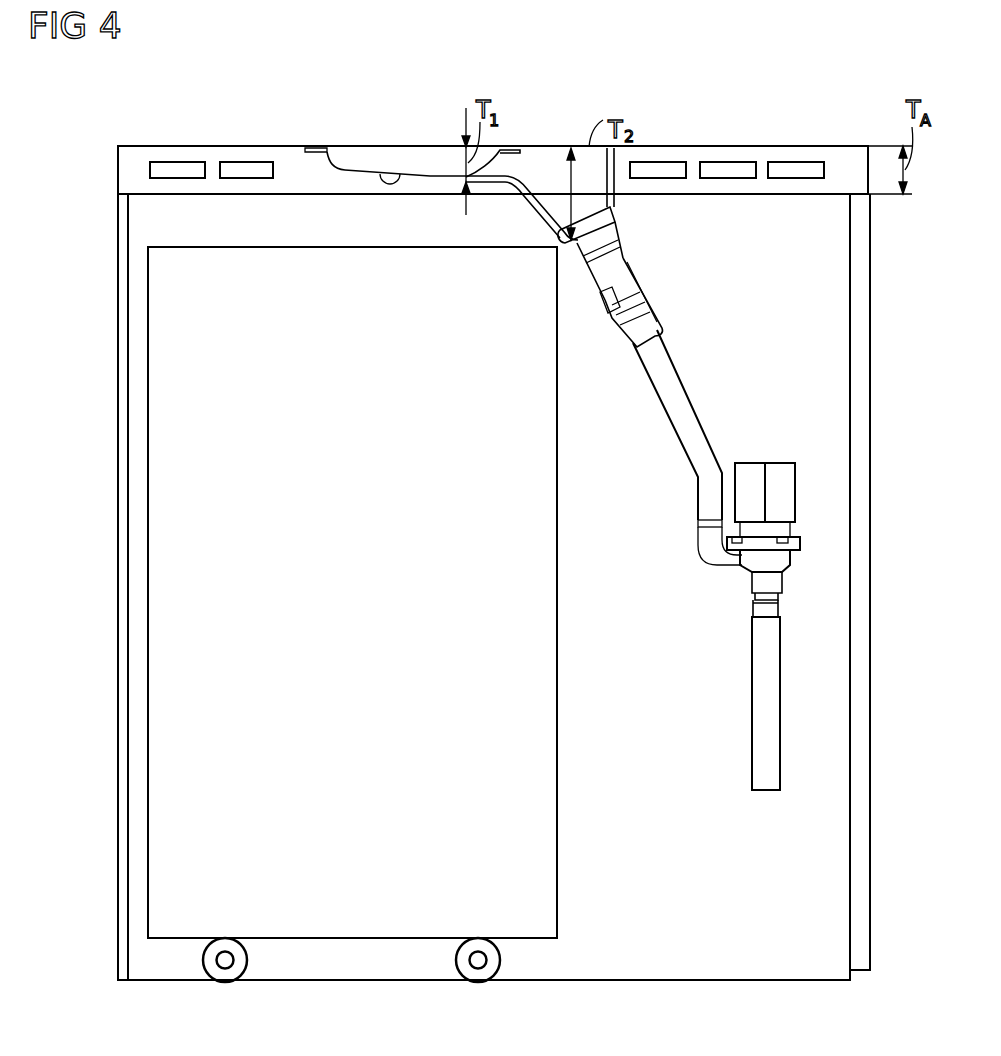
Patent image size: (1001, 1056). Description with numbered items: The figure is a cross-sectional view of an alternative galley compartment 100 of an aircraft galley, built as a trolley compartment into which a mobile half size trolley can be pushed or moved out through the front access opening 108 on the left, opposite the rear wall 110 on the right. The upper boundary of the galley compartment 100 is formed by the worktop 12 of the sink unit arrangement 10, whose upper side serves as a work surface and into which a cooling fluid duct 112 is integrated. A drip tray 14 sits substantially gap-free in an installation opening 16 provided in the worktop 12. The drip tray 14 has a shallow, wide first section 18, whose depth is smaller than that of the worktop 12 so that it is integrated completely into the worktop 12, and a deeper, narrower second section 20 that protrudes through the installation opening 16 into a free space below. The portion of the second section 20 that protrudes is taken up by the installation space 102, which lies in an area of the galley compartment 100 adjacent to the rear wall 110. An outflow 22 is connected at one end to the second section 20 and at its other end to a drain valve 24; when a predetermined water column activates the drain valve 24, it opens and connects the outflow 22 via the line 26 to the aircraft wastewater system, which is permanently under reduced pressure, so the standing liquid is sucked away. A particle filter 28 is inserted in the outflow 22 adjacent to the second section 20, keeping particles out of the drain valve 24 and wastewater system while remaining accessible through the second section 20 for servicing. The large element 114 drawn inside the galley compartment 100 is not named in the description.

The sink unit arrangement 10 is at (575, 122).
The worktop 12 is at (297, 162).
The drip tray 14 is at (378, 147).
The installation opening 16 is at (398, 173).
The first section 18 is at (433, 163).
The second section 20 is at (550, 190).
The outflow 22 is at (678, 410).
The drain valve 24 is at (780, 492).
The line 26 is at (766, 705).
The particle filter 28 is at (625, 272).
The galley compartment 100 is at (828, 100).
The installation space 102 is at (822, 360).
The front access opening 108 is at (118, 625).
The rear wall 110 is at (862, 622).
The cooling fluid duct 112 is at (185, 170).
The inner panel 114 is at (163, 445).